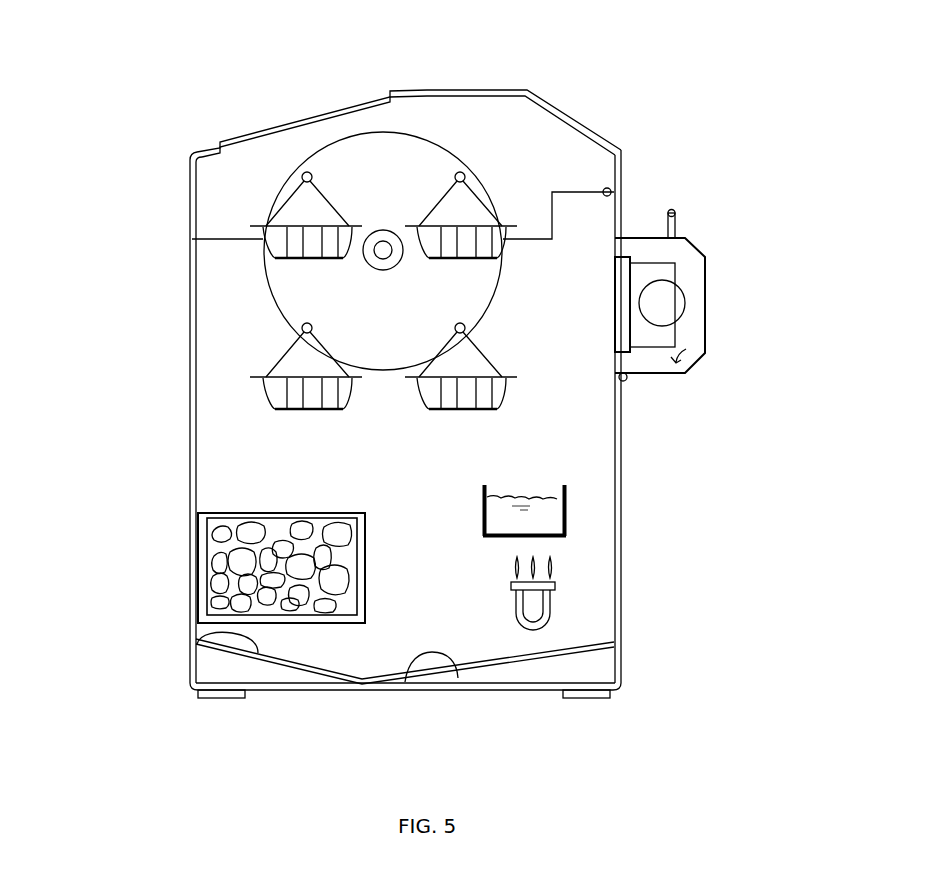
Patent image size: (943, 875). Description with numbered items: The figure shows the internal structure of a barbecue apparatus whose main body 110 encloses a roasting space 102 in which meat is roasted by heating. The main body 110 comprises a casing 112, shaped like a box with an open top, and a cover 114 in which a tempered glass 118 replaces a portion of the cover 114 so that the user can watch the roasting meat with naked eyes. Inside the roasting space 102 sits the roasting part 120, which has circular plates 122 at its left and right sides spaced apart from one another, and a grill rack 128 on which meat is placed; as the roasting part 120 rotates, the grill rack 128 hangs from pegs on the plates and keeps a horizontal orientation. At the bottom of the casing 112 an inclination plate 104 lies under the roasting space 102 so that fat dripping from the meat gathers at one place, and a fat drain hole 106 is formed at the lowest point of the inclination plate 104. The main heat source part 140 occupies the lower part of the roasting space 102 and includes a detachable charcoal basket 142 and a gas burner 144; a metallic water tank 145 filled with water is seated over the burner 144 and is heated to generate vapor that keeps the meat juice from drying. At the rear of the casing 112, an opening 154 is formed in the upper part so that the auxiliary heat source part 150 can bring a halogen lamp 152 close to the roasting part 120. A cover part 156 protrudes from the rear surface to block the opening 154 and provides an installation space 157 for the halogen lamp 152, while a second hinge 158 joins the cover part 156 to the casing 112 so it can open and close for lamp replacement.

The main body 110 is at (342, 361).
The casing 112 is at (190, 332).
The cover 114 is at (190, 197).
The tempered glass 118 is at (278, 118).
The roasting part 120 is at (444, 210).
The circular plates 122 is at (405, 140).
The grill rack 128 is at (465, 225).
The opening 154 is at (608, 250).
The roasting space 102 is at (260, 452).
The charcoal basket 142 is at (208, 616).
The main heat source part 140 is at (378, 646).
The inclination plate 104 is at (198, 640).
The fat drain hole 106 is at (452, 678).
The water tank 145 is at (567, 512).
The burner 144 is at (555, 585).
The auxiliary heat source part 150 is at (709, 288).
The halogen lamp 152 is at (668, 298).
The cover part 156 is at (708, 304).
The installation space 157 is at (685, 367).
The second hinge 158 is at (628, 382).